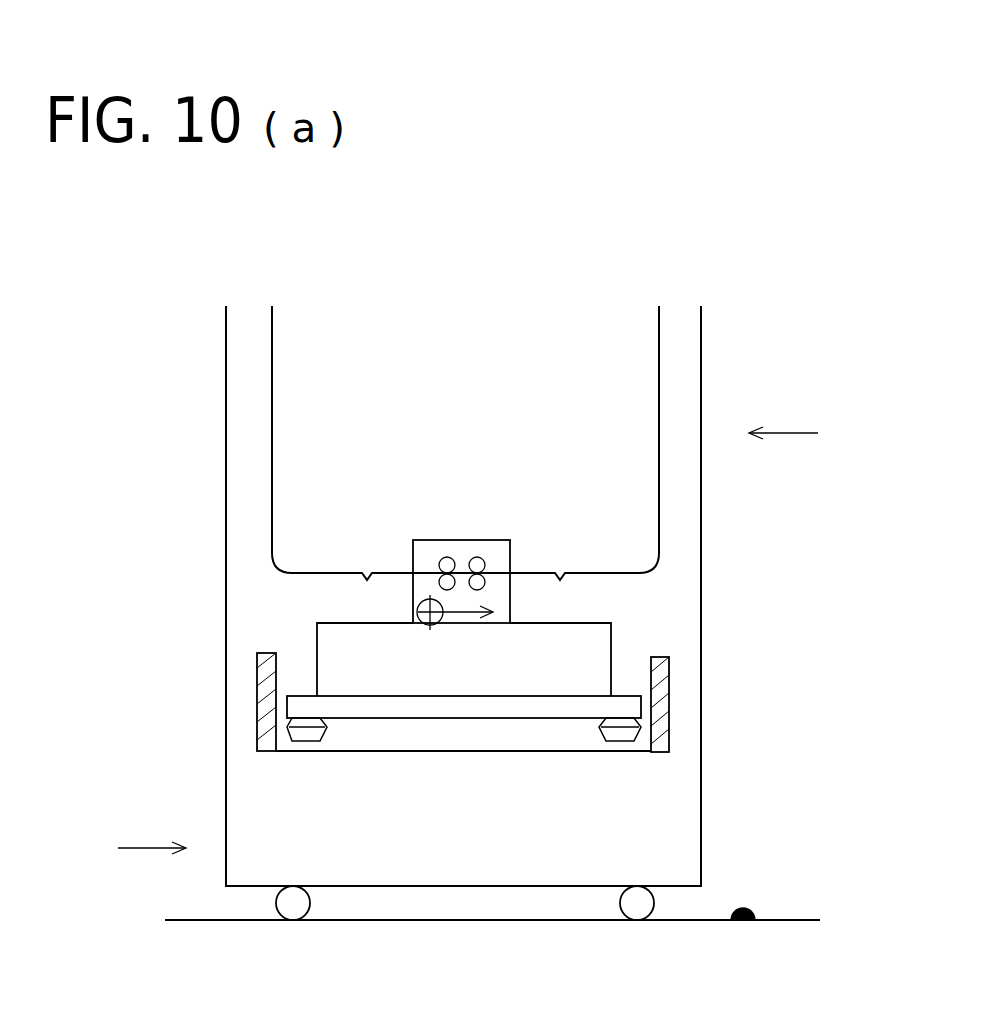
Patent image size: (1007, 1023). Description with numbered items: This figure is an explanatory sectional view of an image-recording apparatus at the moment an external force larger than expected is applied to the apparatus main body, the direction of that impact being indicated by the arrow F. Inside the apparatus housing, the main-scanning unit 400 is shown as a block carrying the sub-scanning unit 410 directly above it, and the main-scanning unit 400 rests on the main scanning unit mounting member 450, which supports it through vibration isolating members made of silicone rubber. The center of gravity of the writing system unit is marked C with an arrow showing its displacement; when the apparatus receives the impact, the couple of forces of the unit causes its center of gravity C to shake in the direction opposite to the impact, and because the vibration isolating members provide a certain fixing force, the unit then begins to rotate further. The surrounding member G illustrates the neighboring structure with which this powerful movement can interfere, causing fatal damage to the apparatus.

The sub-scanning unit 410 is at (466, 538).
The main-scanning unit 400 is at (611, 638).
The main scanning unit mounting member 450 is at (669, 721).
The center of gravity C is at (433, 629).
The glass substrate G is at (659, 510).
The force direction F is at (800, 433).